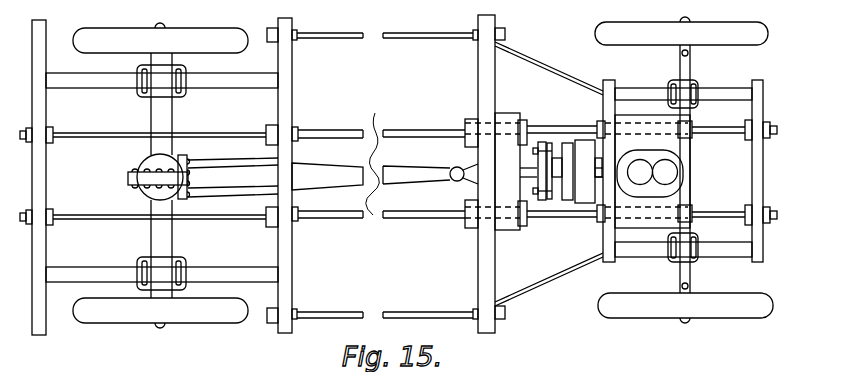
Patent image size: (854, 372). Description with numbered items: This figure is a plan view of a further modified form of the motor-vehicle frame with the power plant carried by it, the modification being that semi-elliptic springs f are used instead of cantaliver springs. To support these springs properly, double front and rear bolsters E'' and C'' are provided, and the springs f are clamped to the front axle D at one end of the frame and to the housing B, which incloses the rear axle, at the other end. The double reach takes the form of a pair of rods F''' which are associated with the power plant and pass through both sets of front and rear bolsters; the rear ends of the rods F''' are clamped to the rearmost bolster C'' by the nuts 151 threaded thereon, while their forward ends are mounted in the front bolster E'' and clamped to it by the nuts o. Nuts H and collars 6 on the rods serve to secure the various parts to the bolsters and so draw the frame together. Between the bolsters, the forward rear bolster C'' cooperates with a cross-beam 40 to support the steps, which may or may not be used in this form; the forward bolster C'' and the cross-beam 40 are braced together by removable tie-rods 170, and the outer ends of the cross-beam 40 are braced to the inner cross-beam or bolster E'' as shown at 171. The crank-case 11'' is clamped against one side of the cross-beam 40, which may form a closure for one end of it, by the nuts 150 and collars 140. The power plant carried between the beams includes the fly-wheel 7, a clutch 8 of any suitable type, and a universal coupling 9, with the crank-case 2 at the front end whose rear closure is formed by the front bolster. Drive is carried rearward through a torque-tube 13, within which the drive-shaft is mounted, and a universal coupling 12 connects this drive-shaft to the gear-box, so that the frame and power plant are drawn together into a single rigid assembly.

The semi-elliptic springs f is at (88, 90).
The nuts 151 is at (46, 142).
The nuts H is at (270, 126).
The double rear bolsters C'' is at (175, 176).
The housing B is at (156, 236).
The torque-tube 13 is at (253, 184).
The collars 6 is at (300, 128).
The tie-rods 170 is at (341, 311).
The double reach rods F''' is at (381, 153).
The nuts 150 is at (465, 122).
The universal coupling 12 is at (452, 166).
The cross-beam 40 is at (476, 256).
The crank-case 11'' is at (496, 156).
The collars 140 is at (546, 139).
The clutch 8 is at (568, 140).
The fly-wheel 7 is at (586, 138).
The universal coupling 9 is at (550, 205).
The front axle D is at (692, 66).
The braces 171 is at (572, 274).
The crank-case 2 is at (645, 224).
The double front bolsters E'' is at (683, 171).
The nuts o is at (760, 140).